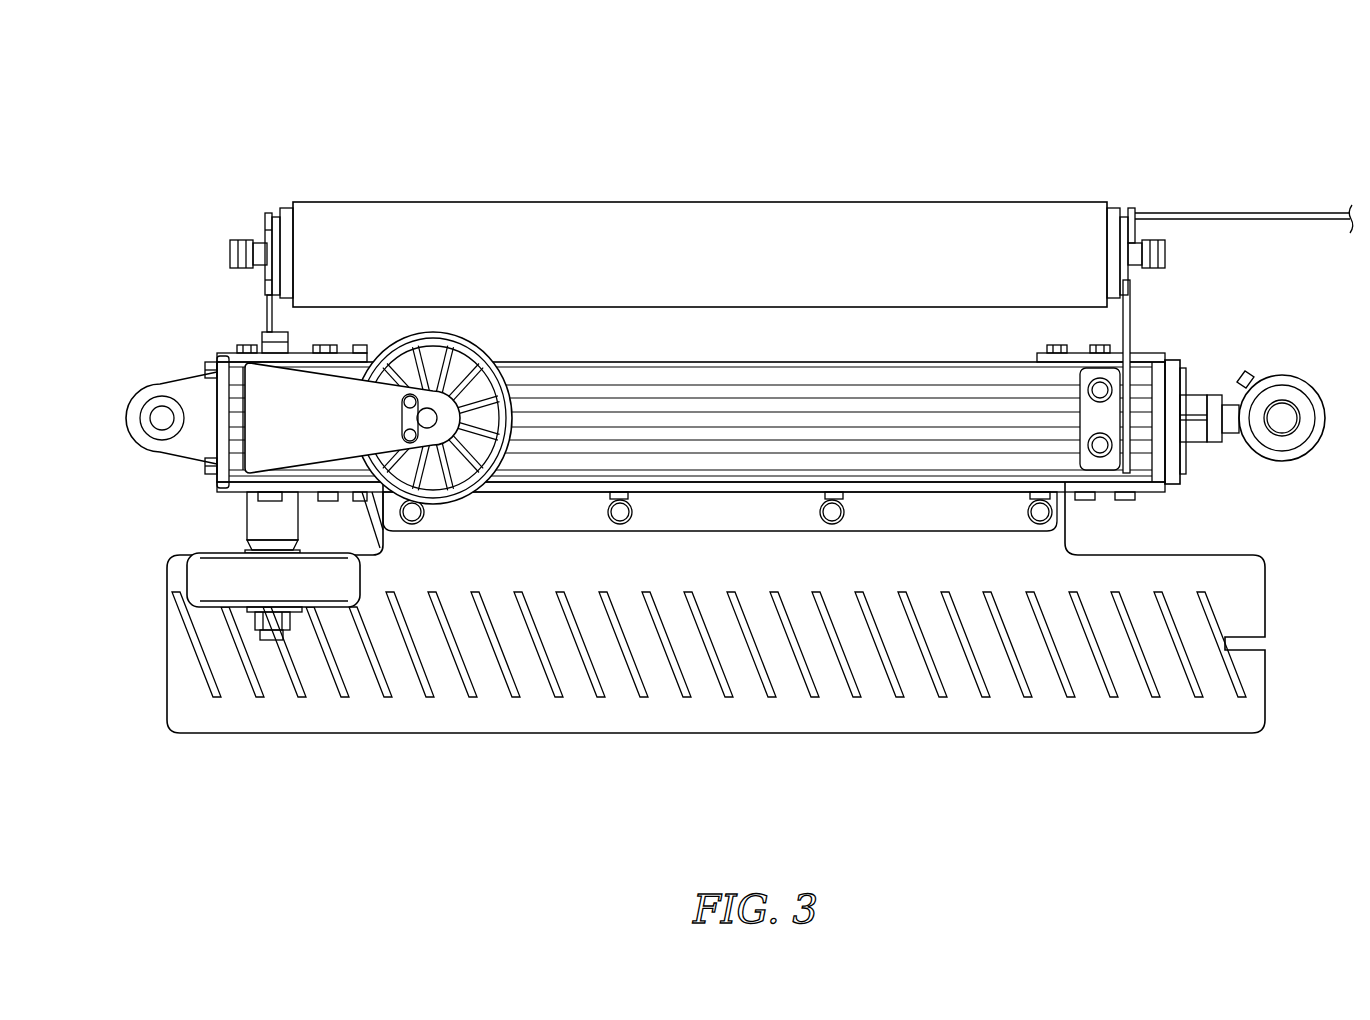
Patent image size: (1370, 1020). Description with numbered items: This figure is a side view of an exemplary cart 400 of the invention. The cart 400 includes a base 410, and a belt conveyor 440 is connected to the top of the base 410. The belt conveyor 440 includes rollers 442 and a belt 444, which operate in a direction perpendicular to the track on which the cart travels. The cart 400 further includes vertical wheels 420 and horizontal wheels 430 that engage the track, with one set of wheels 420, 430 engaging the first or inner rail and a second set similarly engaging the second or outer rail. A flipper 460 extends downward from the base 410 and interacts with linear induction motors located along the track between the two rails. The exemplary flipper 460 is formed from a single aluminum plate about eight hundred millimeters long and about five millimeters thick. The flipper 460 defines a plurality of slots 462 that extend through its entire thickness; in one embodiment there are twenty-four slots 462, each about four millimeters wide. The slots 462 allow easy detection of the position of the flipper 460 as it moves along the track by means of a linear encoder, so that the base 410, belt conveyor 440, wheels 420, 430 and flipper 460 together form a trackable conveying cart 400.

The cart 400 is at (192, 98).
The base 410 is at (1150, 355).
The vertical wheels 420 is at (470, 345).
The horizontal wheels 430 is at (190, 582).
The belt conveyor 440 is at (745, 229).
The rollers 442 is at (263, 232).
The belt 444 is at (640, 200).
The flipper 460 is at (1262, 697).
The slots 462 is at (1017, 678).